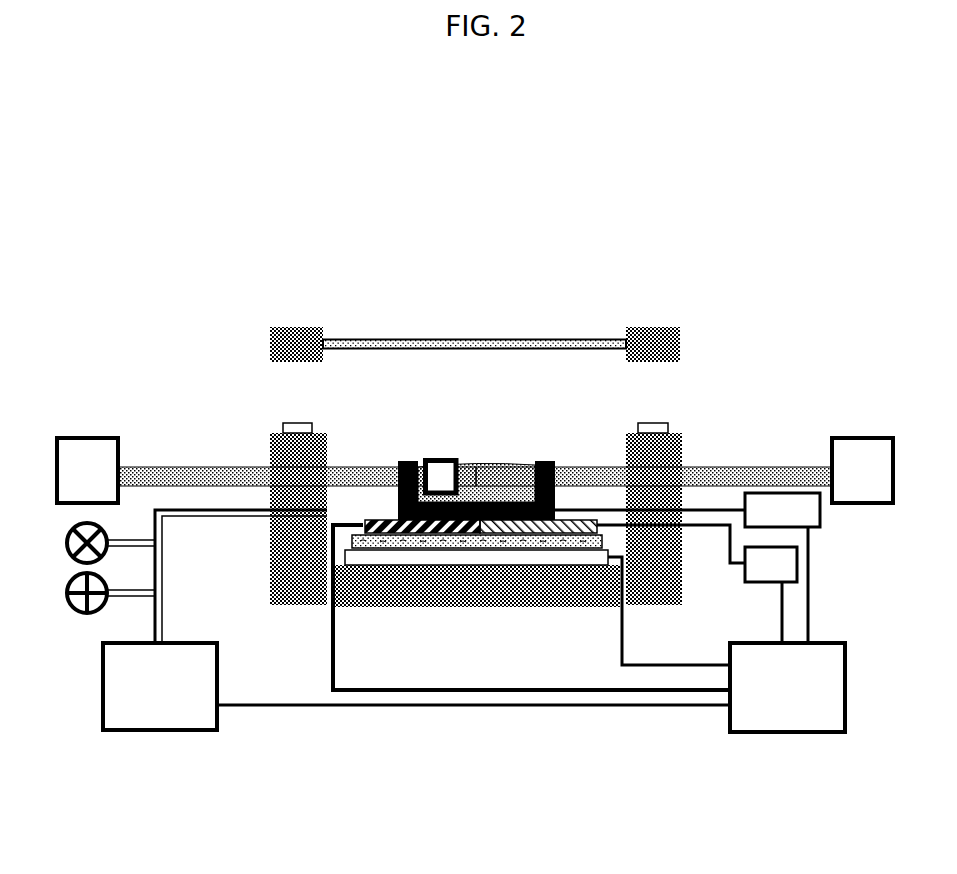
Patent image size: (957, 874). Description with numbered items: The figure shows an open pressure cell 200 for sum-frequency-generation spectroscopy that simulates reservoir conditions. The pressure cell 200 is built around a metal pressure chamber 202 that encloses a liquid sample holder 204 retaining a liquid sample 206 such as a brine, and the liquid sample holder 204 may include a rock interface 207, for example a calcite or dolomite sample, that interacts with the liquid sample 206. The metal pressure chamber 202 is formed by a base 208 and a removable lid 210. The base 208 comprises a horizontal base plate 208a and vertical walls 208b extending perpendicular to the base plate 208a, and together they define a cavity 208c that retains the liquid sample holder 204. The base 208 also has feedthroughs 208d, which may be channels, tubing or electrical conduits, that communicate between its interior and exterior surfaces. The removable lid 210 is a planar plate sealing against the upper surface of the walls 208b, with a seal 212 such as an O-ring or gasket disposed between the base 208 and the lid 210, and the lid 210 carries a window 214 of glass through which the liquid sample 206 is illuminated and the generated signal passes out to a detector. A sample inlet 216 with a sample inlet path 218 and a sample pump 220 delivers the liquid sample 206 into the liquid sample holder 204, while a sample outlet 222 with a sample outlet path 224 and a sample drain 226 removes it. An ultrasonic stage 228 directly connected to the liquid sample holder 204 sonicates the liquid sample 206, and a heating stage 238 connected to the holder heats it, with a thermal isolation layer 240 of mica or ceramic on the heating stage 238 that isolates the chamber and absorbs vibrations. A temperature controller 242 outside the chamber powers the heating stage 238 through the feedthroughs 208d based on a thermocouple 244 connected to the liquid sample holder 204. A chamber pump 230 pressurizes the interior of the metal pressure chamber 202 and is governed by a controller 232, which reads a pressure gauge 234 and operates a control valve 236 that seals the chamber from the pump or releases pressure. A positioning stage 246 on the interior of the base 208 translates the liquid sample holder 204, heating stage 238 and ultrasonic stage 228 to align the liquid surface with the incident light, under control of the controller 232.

The pressure cell 200 is at (278, 203).
The metal pressure chamber 202 is at (238, 228).
The liquid sample holder 204 is at (550, 462).
The liquid sample 206 is at (465, 475).
The rock interface 207 is at (443, 458).
The base 208 is at (273, 437).
The base plate 208a is at (293, 605).
The vertical wall 208b is at (681, 447).
The cavity 208c is at (380, 434).
The feedthrough 208d is at (330, 573).
The removable lid 210 is at (277, 327).
The seal 212 is at (663, 423).
The window 214 is at (442, 337).
The sample inlet 216 is at (143, 368).
The sample inlet path 218 is at (187, 467).
The sample pump 220 is at (92, 438).
The sample outlet 222 is at (815, 368).
The sample outlet path 224 is at (780, 465).
The sample drain 226 is at (867, 437).
The ultrasonic stage 228 is at (428, 537).
The chamber pump 230 is at (416, 620).
The controller 232 is at (589, 628).
The pressure gauge 234 is at (73, 608).
The control valve 236 is at (73, 558).
The heating stage 238 is at (523, 537).
The thermal isolation layer 240 is at (485, 550).
The temperature controller 242 is at (697, 584).
The thermocouple 244 is at (687, 568).
The positioning stage 246 is at (440, 565).